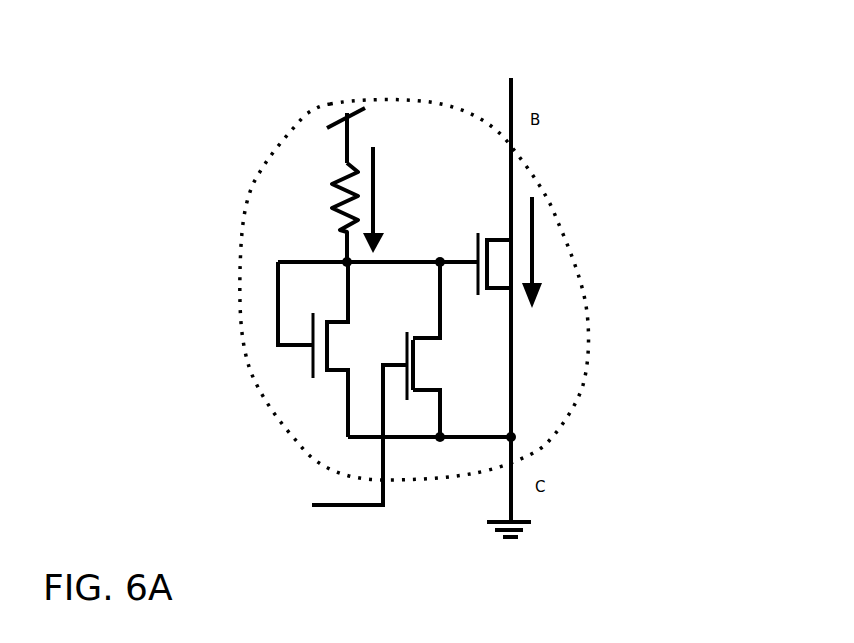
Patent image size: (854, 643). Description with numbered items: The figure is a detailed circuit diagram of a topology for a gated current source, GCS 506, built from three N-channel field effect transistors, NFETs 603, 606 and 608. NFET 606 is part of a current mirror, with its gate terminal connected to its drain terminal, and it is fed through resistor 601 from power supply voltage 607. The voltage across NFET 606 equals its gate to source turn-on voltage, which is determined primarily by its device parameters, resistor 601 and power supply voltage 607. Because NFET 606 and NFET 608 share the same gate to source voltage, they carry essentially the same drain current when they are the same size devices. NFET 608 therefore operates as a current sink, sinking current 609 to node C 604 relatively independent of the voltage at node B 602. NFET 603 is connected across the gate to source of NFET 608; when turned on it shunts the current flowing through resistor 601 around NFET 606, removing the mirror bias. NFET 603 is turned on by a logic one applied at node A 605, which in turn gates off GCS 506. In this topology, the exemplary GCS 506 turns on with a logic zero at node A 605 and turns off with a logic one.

The gated current source 506 is at (562, 218).
The resistor 601 is at (318, 188).
The node B 602 is at (523, 85).
The NFET 603 is at (445, 362).
The node C 604 is at (555, 480).
The node A 605 is at (308, 498).
The NFET 606 is at (288, 354).
The power supply voltage 607 is at (340, 110).
The NFET 608 is at (492, 220).
The current 609 is at (533, 260).